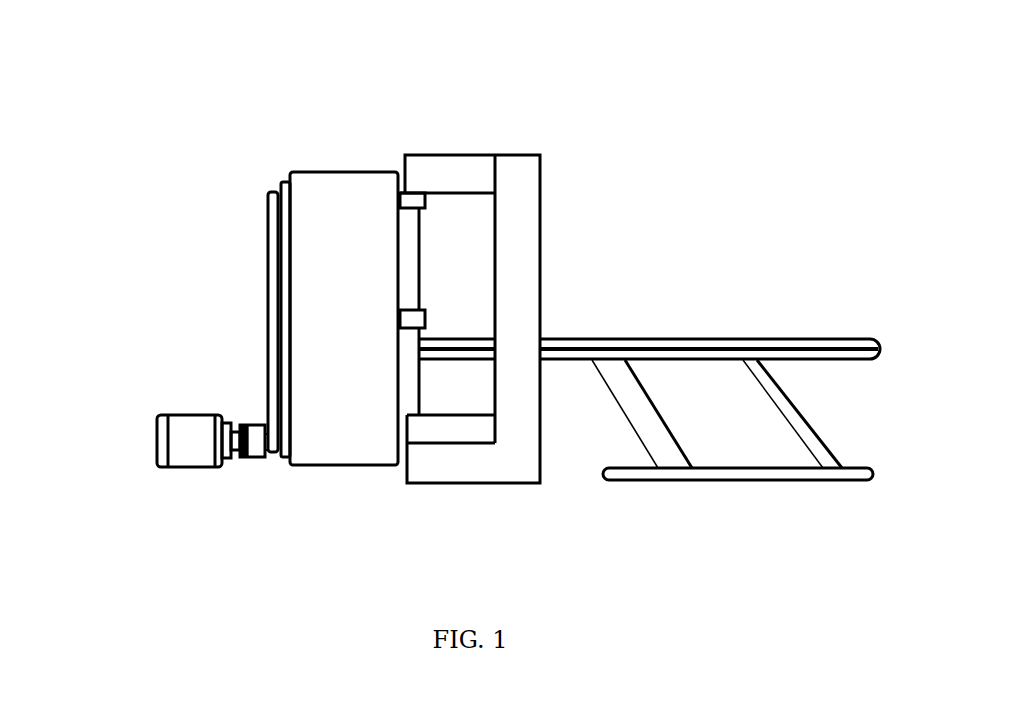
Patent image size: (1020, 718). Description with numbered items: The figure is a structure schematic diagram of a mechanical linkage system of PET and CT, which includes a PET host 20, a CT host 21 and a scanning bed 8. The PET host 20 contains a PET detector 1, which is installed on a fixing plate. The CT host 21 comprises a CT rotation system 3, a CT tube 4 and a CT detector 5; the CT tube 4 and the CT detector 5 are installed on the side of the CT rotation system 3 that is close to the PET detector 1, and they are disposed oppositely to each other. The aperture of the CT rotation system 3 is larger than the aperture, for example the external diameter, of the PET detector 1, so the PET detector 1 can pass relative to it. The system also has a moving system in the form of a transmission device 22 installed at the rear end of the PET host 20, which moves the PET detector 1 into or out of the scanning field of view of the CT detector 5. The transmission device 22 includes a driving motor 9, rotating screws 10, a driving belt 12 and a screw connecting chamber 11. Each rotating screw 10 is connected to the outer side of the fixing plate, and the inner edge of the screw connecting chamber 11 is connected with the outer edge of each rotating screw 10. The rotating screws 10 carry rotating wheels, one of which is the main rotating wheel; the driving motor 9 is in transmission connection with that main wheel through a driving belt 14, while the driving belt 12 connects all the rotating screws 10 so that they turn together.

The PET detector 1 is at (405, 237).
The CT rotation system 3 is at (527, 235).
The CT tube 4 is at (447, 173).
The CT detector 5 is at (443, 427).
The scanning bed 8 is at (797, 338).
The driving motor 9 is at (190, 453).
The rotating screw 10 is at (268, 316).
The screw connecting chamber 11 is at (347, 192).
The driving belt 12 is at (268, 192).
The driving belt of the main rotating wheel 14 is at (250, 453).
The PET host 20 is at (264, 244).
The CT host 21 is at (613, 288).
The transmission device 22 is at (145, 449).